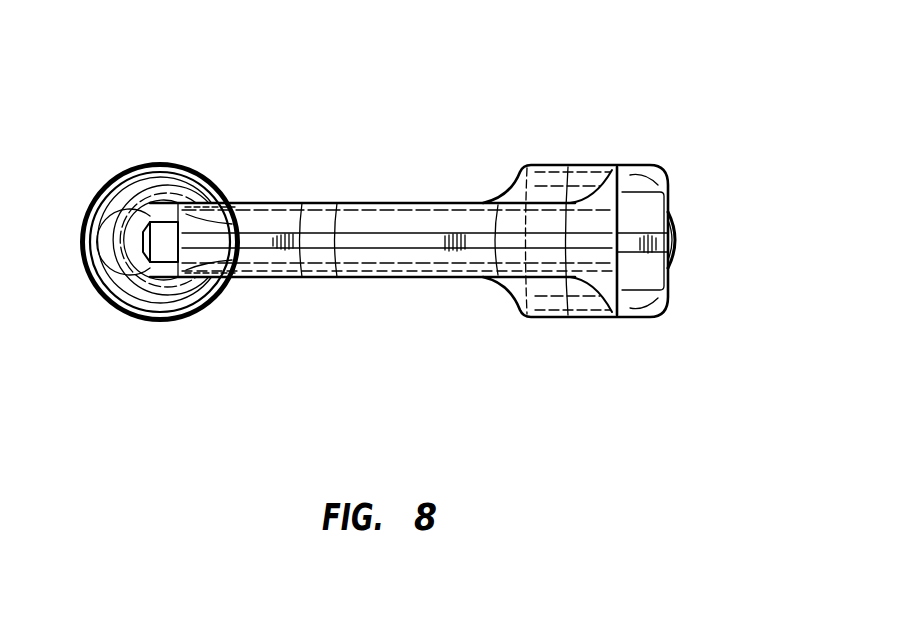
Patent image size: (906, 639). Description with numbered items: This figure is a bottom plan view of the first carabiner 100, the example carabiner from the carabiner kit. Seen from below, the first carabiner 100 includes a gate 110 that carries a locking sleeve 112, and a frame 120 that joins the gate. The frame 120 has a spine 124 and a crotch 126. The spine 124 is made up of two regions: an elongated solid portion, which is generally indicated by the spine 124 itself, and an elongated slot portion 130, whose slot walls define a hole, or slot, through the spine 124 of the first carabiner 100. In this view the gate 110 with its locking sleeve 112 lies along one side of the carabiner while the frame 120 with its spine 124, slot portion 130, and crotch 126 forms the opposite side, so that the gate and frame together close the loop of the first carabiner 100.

The first carabiner 100 is at (178, 98).
The gate 110 is at (143, 206).
The locking sleeve 112 is at (108, 302).
The frame 120 is at (315, 258).
The spine 124 is at (633, 182).
The crotch 126 is at (479, 258).
The elongated slot portion 130 is at (680, 213).